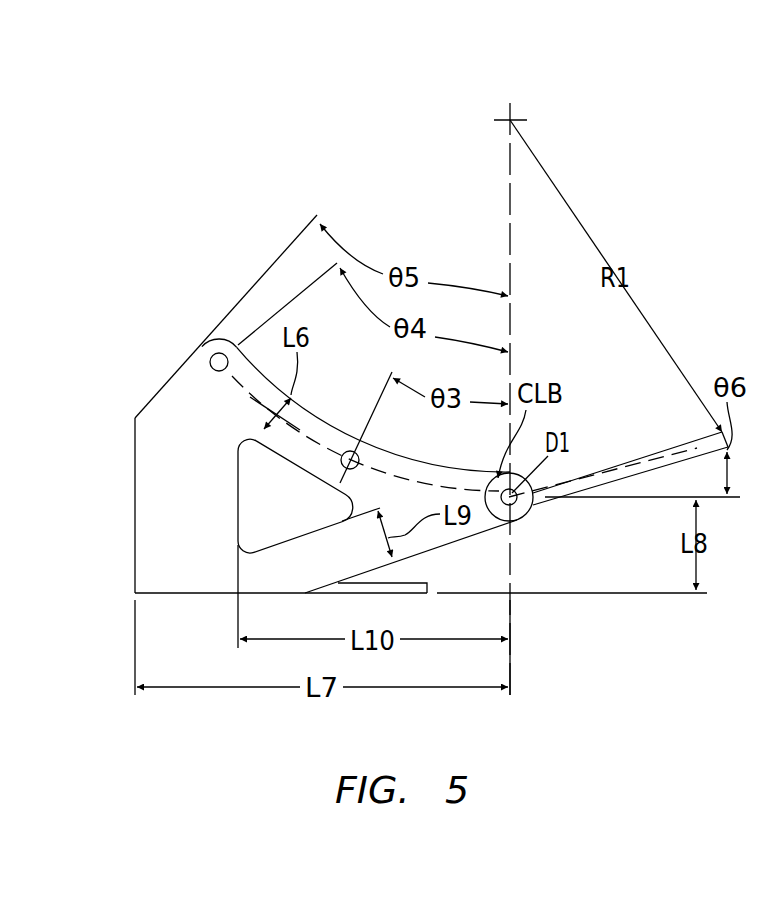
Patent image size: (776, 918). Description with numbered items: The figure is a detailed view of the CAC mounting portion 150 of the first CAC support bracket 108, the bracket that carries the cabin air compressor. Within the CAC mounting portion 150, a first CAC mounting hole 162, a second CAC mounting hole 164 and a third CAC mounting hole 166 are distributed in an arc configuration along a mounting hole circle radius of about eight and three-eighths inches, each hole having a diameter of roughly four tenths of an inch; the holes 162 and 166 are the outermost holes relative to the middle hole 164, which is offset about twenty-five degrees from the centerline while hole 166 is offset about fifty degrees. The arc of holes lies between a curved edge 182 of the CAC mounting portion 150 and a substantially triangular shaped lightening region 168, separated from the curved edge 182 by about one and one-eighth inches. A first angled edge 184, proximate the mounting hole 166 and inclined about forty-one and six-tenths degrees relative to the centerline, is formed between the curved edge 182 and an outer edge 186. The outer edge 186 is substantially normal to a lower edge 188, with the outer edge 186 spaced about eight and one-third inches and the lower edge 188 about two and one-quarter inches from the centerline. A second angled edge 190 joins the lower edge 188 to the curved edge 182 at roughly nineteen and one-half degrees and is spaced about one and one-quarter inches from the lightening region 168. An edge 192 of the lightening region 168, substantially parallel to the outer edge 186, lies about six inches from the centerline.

The first CAC support bracket 108 is at (158, 128).
The CAC mounting portion 150 is at (525, 512).
The first CAC mounting hole 162 is at (531, 486).
The second CAC mounting hole 164 is at (358, 458).
The third CAC mounting hole 166 is at (219, 362).
The substantially triangular shaped lightening region 168 is at (257, 470).
The curved edge 182 is at (335, 423).
The first angled edge 184 is at (160, 391).
The outer edge 186 is at (135, 540).
The lower edge 188 is at (152, 597).
The second angled edge 190 is at (447, 545).
The edge of lightening region 192 is at (238, 507).